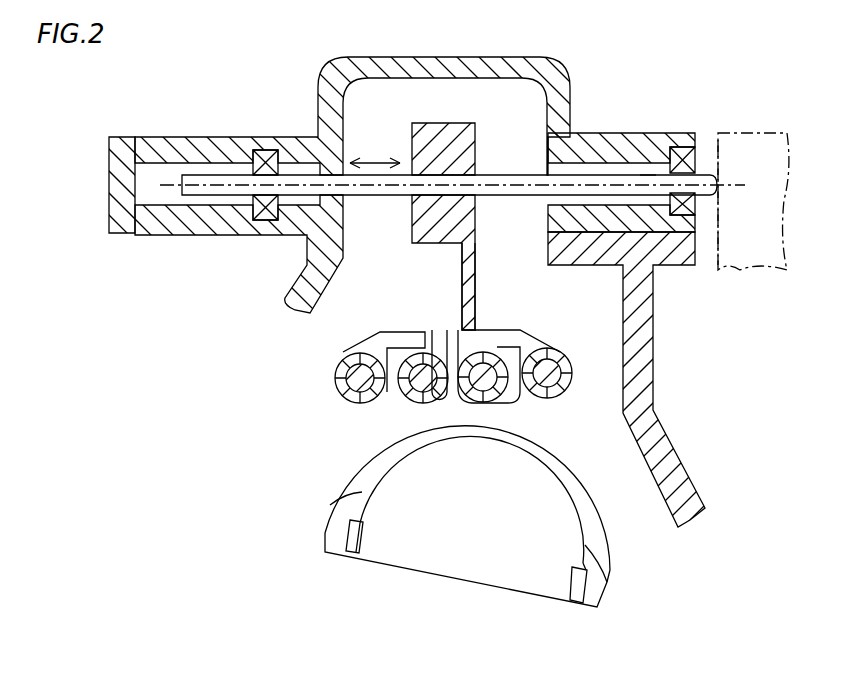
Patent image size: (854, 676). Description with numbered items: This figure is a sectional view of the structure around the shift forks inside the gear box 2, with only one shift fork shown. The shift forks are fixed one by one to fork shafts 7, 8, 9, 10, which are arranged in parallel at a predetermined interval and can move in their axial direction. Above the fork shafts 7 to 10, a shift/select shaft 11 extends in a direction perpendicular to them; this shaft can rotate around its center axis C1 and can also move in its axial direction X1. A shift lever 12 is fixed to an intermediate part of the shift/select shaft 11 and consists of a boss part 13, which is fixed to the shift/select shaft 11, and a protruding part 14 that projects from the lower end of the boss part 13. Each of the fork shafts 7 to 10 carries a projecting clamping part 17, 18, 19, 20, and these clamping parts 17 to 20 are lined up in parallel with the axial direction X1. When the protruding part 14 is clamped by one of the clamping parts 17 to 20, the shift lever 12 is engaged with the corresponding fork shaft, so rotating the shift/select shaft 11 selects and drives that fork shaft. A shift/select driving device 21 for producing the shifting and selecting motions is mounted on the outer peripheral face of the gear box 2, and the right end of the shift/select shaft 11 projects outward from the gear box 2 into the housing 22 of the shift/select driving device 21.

The gear box 2 is at (481, 57).
The shift/select shaft 11 is at (500, 174).
The axial direction X1 is at (376, 163).
The center axis C1 is at (648, 177).
The shift lever 12 is at (507, 197).
The boss part 13 is at (455, 221).
The protruding part 14 is at (470, 284).
The shift/select driving device 21 is at (768, 133).
The housing 22 is at (733, 133).
The clamping part 17 is at (398, 340).
The clamping part 18 is at (440, 340).
The clamping part 19 is at (472, 343).
The clamping part 20 is at (532, 347).
The fork shaft 7 is at (356, 400).
The fork shaft 8 is at (416, 392).
The fork shaft 9 is at (492, 388).
The fork shaft 10 is at (550, 368).